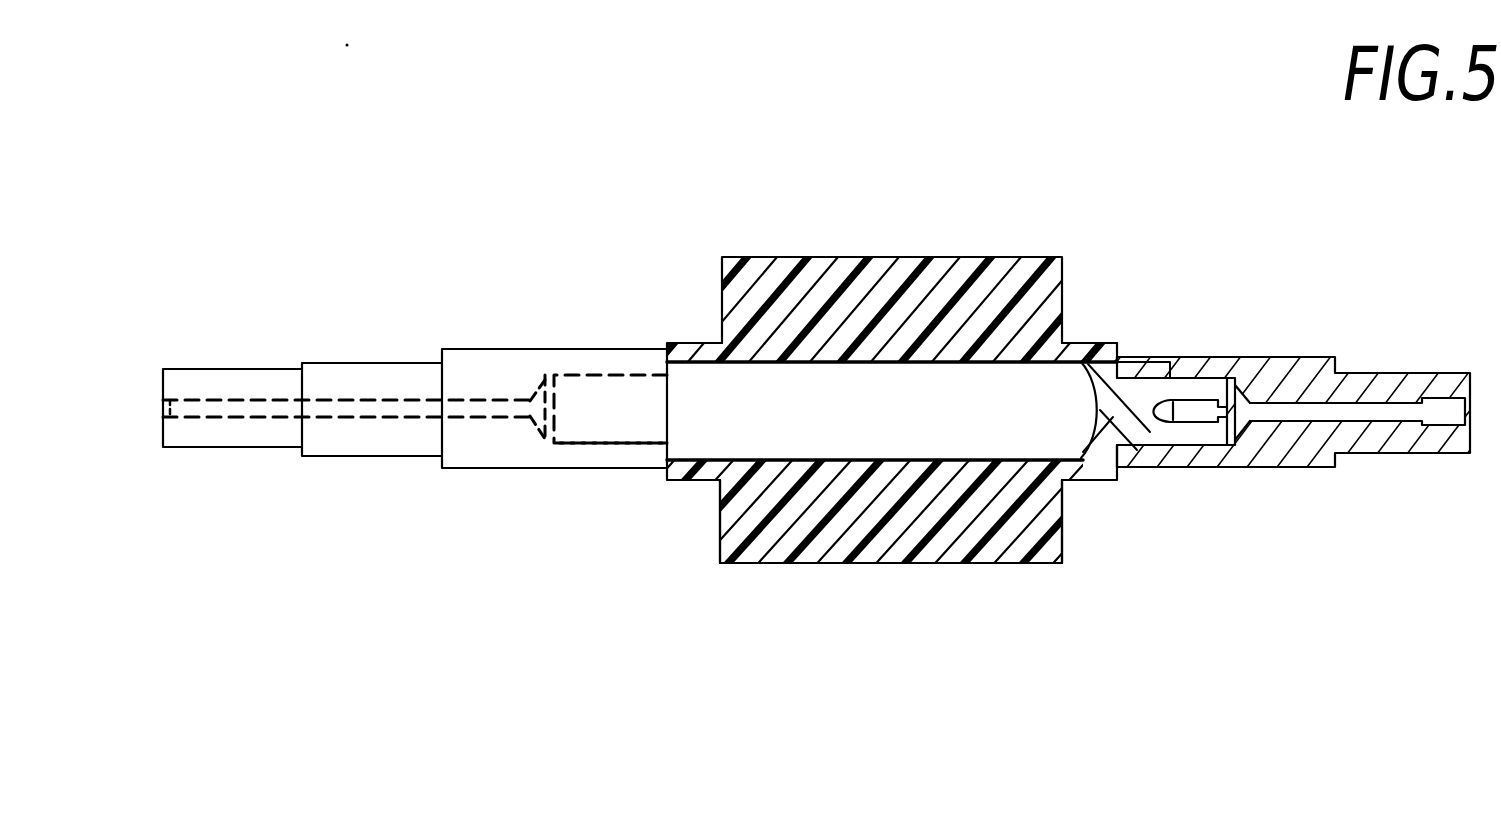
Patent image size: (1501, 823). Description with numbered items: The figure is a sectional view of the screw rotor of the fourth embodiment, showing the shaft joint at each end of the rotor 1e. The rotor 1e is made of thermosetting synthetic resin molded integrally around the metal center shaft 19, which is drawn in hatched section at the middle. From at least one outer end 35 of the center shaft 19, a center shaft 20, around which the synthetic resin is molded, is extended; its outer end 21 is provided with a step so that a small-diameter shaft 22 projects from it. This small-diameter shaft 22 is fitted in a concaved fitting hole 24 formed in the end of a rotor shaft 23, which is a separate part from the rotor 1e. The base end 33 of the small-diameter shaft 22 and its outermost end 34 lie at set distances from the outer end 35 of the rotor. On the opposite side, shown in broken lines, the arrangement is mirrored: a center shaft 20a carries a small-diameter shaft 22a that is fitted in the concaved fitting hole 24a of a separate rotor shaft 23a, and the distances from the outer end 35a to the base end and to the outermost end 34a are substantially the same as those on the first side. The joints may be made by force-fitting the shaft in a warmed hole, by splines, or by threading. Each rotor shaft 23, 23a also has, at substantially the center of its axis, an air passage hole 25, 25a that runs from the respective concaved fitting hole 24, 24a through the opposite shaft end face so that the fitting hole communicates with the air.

The rotor 1e is at (792, 258).
The center shaft 19 is at (877, 463).
The center shaft 20 is at (1083, 343).
The center shaft 20a is at (690, 343).
The outer end 21 is at (1143, 357).
The small-diameter shaft 22 is at (1177, 357).
The small-diameter shaft 22a is at (613, 375).
The rotor shaft 23 is at (1293, 357).
The rotor shaft 23a is at (487, 348).
The concaved fitting hole 24 is at (1158, 443).
The concaved fitting hole 24a is at (630, 443).
The air passage hole 25 is at (1378, 400).
The air passage hole 25a is at (257, 392).
The base end 33 is at (1118, 357).
The outermost end 34 is at (1240, 380).
The outermost end 34a is at (540, 430).
The outer end 35 is at (1063, 530).
The outer end 35a is at (720, 533).